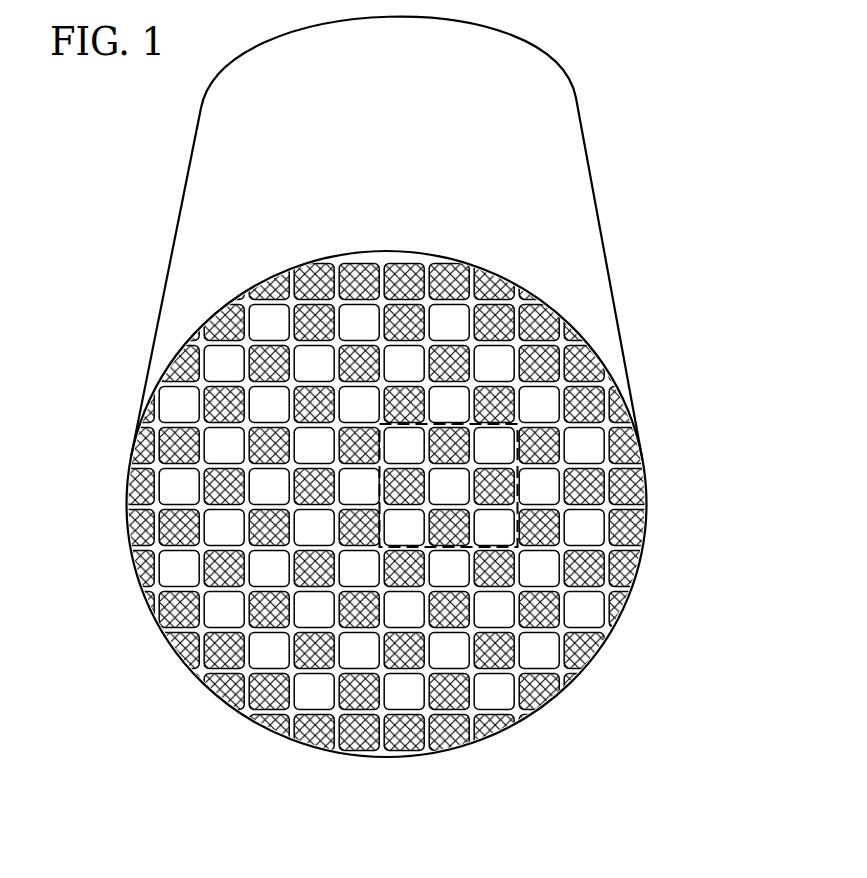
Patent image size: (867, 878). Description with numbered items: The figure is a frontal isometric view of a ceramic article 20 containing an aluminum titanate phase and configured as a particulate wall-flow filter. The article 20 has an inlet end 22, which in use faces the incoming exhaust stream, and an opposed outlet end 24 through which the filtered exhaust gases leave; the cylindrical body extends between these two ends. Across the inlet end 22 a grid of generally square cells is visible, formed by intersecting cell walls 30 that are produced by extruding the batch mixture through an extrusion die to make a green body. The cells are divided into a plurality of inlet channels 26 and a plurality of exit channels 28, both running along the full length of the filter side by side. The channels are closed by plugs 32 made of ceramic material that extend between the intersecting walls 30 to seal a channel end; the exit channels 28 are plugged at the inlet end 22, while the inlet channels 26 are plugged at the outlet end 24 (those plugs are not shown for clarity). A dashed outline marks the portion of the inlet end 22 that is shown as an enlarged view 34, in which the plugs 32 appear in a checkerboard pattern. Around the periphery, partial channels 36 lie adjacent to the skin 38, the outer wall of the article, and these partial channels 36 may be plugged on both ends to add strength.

The ceramic article 20 is at (588, 89).
The inlet end 22 is at (486, 750).
The outlet end 24 is at (188, 108).
The inlet channels 26 is at (222, 613).
The exit channels 28 is at (184, 547).
The intersecting cell walls 30 is at (314, 711).
The plugs 32 is at (178, 525).
The enlarged view 34 is at (522, 440).
The partial channels 36 is at (582, 357).
The skin 38 is at (545, 299).